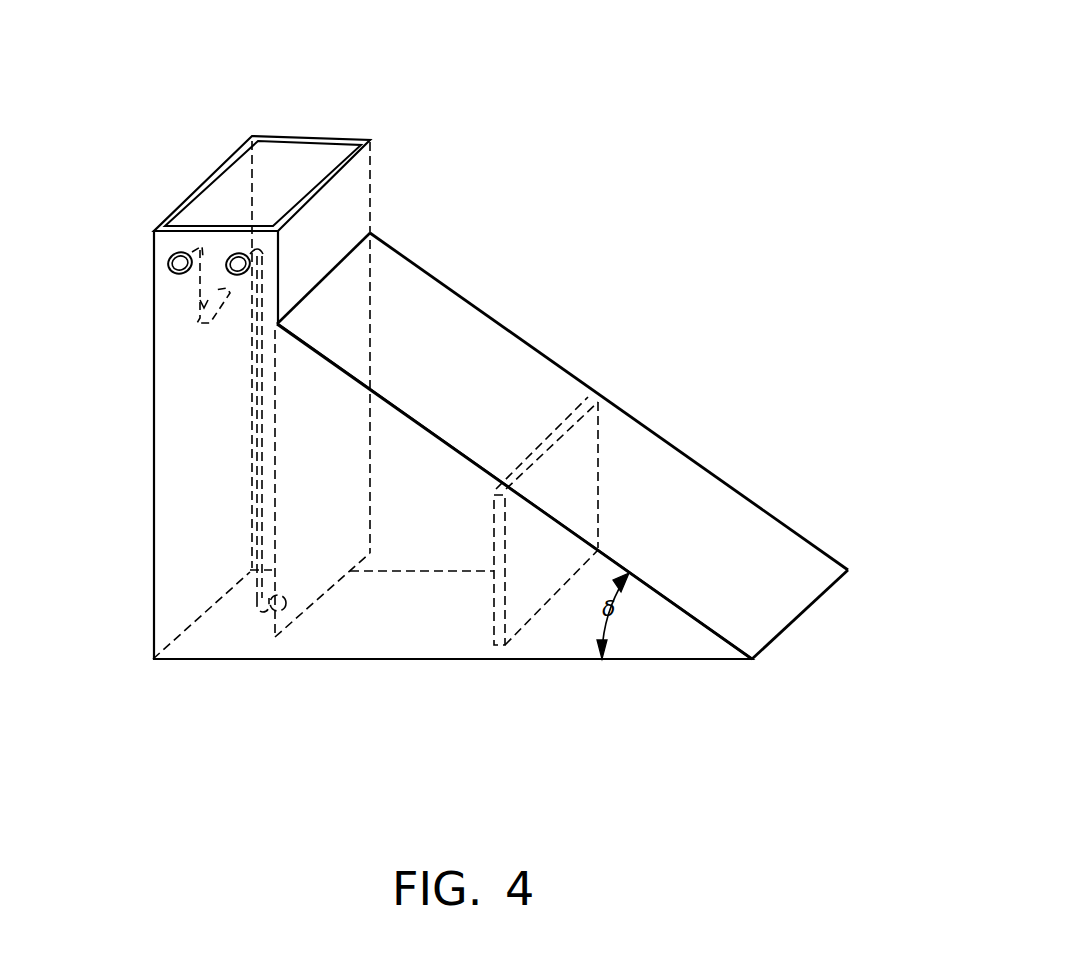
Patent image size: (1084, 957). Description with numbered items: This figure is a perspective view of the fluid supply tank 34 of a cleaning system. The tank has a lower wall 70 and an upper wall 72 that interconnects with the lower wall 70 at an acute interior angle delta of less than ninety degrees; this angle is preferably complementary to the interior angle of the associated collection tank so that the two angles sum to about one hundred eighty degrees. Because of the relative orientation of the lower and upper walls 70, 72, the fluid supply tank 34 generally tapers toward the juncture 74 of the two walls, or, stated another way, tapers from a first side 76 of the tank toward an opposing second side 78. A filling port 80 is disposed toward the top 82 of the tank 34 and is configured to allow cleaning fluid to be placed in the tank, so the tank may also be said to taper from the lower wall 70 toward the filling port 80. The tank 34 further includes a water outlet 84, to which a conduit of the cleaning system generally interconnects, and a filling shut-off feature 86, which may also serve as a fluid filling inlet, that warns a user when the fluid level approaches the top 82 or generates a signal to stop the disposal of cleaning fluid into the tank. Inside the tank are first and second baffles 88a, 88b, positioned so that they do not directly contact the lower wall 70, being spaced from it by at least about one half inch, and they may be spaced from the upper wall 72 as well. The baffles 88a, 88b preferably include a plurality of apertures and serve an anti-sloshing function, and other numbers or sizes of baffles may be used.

The fluid supply tank 34 is at (570, 210).
The lower wall 70 is at (383, 658).
The upper wall 72 is at (491, 407).
The juncture 74 is at (795, 622).
The first side 76 is at (153, 423).
The second side 78 is at (848, 568).
The filling port 80 is at (228, 203).
The top 82 is at (290, 137).
The water outlet 84 is at (228, 253).
The filling shut-off feature 86 is at (180, 277).
The first baffle 88a is at (325, 597).
The second baffle 88b is at (540, 607).